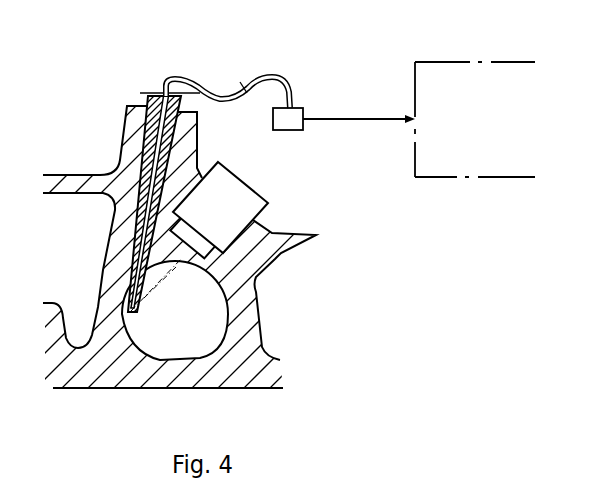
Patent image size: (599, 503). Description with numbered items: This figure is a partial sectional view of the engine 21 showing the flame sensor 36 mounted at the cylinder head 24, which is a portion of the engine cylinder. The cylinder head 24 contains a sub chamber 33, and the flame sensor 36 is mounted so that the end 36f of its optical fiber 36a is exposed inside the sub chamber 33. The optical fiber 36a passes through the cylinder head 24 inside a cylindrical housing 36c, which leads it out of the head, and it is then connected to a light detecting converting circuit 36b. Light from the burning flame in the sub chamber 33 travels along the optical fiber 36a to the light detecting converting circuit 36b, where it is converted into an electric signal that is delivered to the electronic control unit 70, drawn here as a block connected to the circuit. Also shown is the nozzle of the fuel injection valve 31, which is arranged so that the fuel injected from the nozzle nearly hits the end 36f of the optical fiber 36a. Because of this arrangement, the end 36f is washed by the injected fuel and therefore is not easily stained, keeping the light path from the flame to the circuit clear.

The engine 21 is at (78, 150).
The cylinder head 24 is at (284, 234).
The nozzle of the fuel injection valve 31 is at (267, 204).
The sub chamber 33 is at (215, 328).
The flame sensor 36 is at (133, 104).
The optical fiber 36a is at (292, 89).
The light detecting converting circuit 36b is at (293, 131).
The cylindrical housing 36c is at (155, 90).
The end of the optical fiber 36f is at (133, 318).
The electronic control unit 70 is at (460, 178).